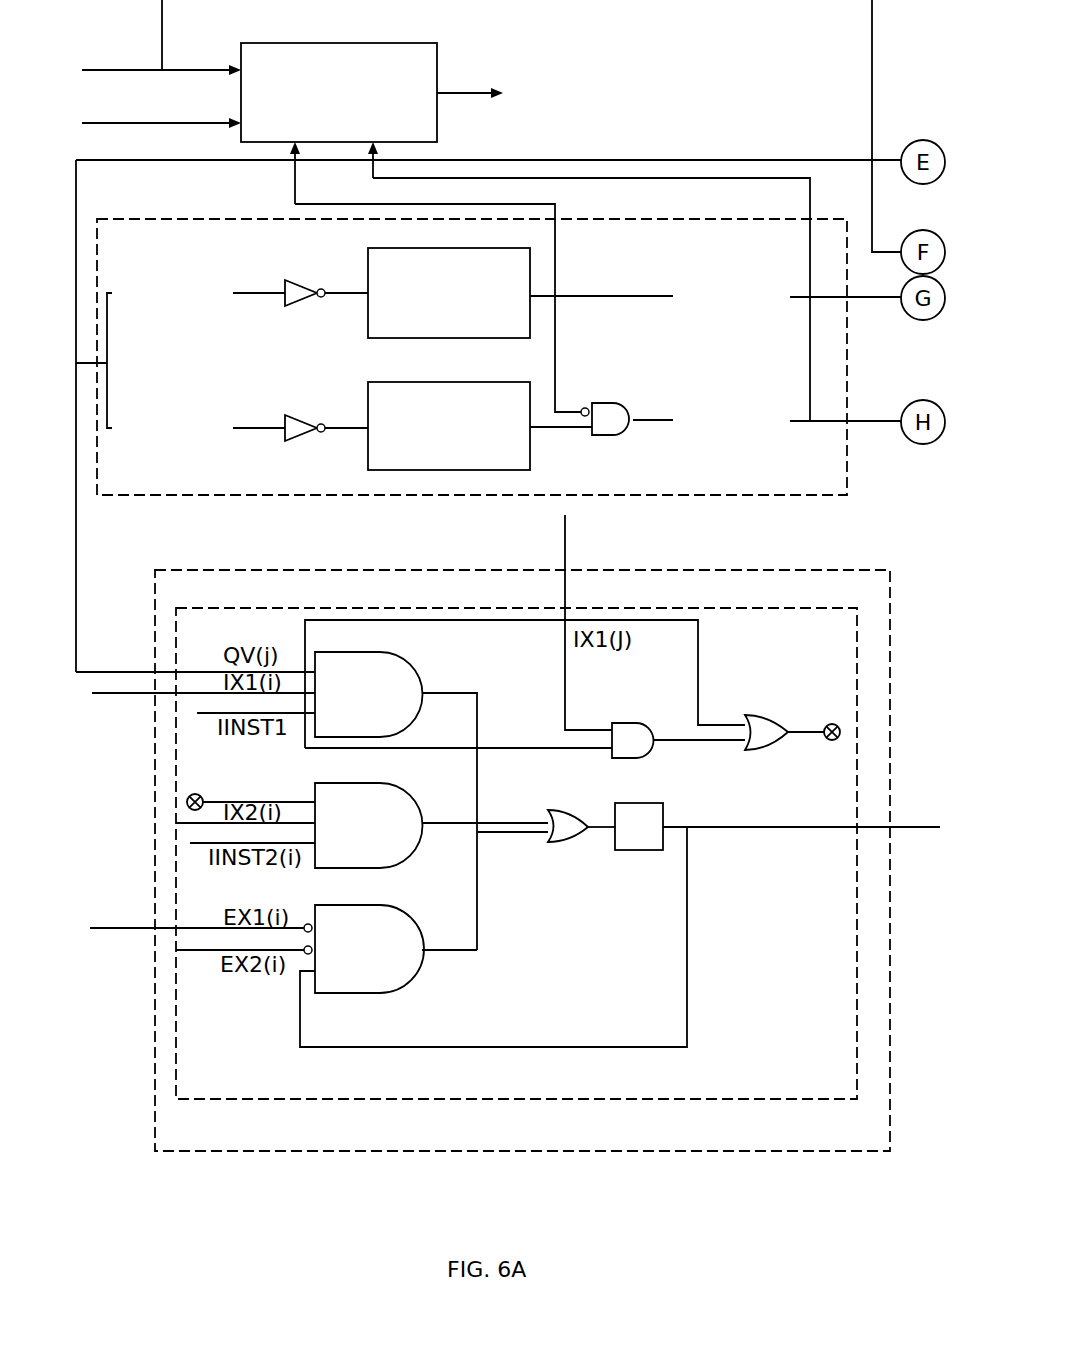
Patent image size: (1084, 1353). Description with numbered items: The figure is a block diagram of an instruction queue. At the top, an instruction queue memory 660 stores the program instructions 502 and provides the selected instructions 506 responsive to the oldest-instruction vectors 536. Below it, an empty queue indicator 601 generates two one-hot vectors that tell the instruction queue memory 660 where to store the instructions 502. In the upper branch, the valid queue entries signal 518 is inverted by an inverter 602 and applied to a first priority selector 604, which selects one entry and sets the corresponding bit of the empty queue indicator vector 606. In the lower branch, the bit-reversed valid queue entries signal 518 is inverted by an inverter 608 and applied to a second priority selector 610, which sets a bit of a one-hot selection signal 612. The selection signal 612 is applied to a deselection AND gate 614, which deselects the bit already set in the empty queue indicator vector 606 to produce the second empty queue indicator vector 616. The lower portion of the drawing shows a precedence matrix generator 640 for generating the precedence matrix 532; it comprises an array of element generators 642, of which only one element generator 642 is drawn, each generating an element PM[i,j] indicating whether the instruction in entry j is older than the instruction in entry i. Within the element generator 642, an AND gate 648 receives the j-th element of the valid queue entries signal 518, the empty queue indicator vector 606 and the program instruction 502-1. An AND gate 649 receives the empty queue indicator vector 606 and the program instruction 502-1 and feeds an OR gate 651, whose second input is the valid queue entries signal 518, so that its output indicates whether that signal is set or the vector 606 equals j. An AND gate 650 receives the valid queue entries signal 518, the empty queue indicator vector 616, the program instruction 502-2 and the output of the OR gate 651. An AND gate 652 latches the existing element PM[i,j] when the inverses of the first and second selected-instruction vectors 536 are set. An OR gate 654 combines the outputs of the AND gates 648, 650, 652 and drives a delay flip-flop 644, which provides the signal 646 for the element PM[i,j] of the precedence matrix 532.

The instruction queue memory 660 is at (375, 43).
The oldest-instruction vectors 536 is at (115, 70).
The program instructions 502 is at (145, 124).
The selected instructions 506 is at (467, 95).
The empty queue indicator 601 is at (158, 219).
The valid queue entries signal 518 is at (250, 296).
The inverter 602 is at (296, 280).
The first priority selector 604 is at (453, 248).
The inverter 608 is at (296, 415).
The second priority selector 610 is at (453, 382).
The empty queue indicator vector 606 is at (655, 296).
The selection signal 612 is at (556, 428).
The deselection AND gate 614 is at (607, 403).
The empty queue indicator vector 616 is at (875, 423).
The precedence matrix generator 640 is at (245, 1152).
The element generator 642 is at (463, 1100).
The AND gate 648 is at (385, 652).
The AND gate 649 is at (620, 723).
The OR gate 651 is at (752, 715).
The AND gate 650 is at (385, 783).
The AND gate 652 is at (385, 905).
The OR gate 654 is at (567, 810).
The delay flip-flop 644 is at (640, 803).
The signal for element PM(i,j) 646 is at (775, 829).
The precedence matrix 532 is at (928, 829).
The program instruction IINST1 502-1 is at (305, 748).
The program instruction IINST2 502-2 is at (195, 845).